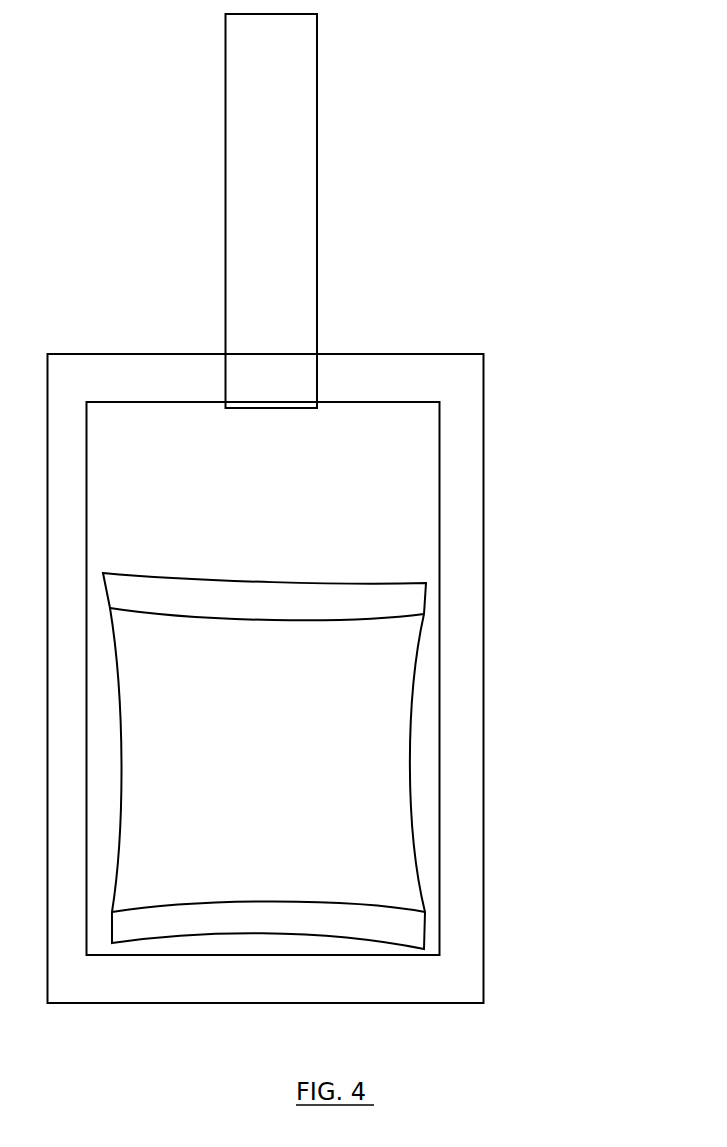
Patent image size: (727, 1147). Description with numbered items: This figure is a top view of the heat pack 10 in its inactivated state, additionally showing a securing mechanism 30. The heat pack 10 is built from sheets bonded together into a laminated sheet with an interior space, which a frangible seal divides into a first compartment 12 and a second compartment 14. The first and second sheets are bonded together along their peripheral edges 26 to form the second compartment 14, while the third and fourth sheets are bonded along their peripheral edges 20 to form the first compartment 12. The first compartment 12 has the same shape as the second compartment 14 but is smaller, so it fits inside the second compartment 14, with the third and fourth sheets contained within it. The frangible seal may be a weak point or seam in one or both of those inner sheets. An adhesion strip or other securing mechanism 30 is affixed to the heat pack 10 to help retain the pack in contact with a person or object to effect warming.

The heat pack 10 is at (525, 530).
The first compartment 12 is at (382, 695).
The second compartment 14 is at (413, 457).
The peripheral edges 20 is at (405, 932).
The peripheral edges 26 is at (465, 491).
The securing mechanism 30 is at (286, 180).